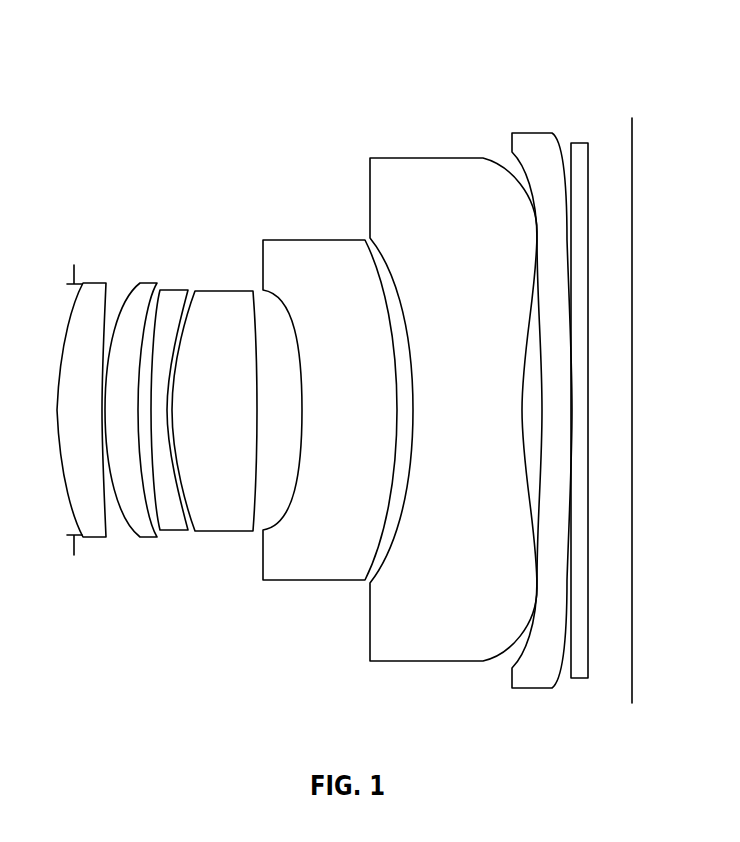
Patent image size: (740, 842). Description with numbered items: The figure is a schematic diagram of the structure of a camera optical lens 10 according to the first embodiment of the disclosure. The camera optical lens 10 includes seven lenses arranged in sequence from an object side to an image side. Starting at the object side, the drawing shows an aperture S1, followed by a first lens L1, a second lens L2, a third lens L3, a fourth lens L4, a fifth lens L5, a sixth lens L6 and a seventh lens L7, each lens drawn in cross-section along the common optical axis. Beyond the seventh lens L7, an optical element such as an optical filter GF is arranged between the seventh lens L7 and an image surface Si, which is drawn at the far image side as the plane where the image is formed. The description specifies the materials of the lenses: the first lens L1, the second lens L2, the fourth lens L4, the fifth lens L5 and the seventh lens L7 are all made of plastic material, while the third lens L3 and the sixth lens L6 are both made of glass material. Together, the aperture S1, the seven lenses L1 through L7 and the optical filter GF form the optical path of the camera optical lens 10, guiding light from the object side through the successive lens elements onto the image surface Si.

The camera optical lens 10 is at (372, 90).
The aperture S1 is at (65, 408).
The first lens L1 is at (82, 398).
The second lens L2 is at (136, 398).
The third lens L3 is at (171, 399).
The fourth lens L4 is at (214, 399).
The fifth lens L5 is at (330, 398).
The sixth lens L6 is at (453, 398).
The seventh lens L7 is at (542, 399).
The optical filter GF is at (583, 399).
The image surface Si is at (636, 398).